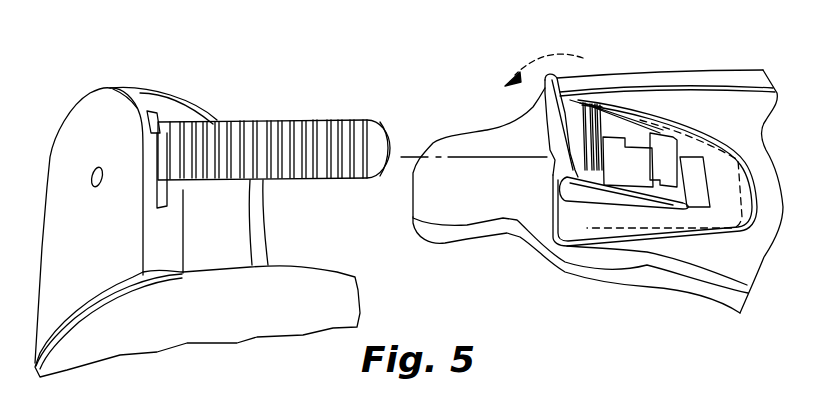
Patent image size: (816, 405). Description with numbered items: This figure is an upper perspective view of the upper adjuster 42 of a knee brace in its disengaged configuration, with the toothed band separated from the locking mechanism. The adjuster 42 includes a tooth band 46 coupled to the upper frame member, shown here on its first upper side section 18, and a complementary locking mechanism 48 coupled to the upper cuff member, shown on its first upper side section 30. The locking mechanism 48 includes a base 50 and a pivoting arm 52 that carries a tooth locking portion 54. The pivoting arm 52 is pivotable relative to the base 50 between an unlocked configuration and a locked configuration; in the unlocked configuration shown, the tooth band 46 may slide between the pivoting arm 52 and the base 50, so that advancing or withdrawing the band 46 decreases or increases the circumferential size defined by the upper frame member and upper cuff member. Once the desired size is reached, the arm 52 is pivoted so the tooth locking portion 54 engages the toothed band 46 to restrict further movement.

The first upper side section 18 is at (135, 98).
The tooth band 46 is at (268, 118).
The upper adjuster 42 is at (383, 58).
The first upper side section 30 is at (711, 93).
The pivoting arm 52 is at (556, 73).
The tooth locking portion 54 is at (598, 106).
The locking mechanism 48 is at (646, 118).
The base 50 is at (619, 200).